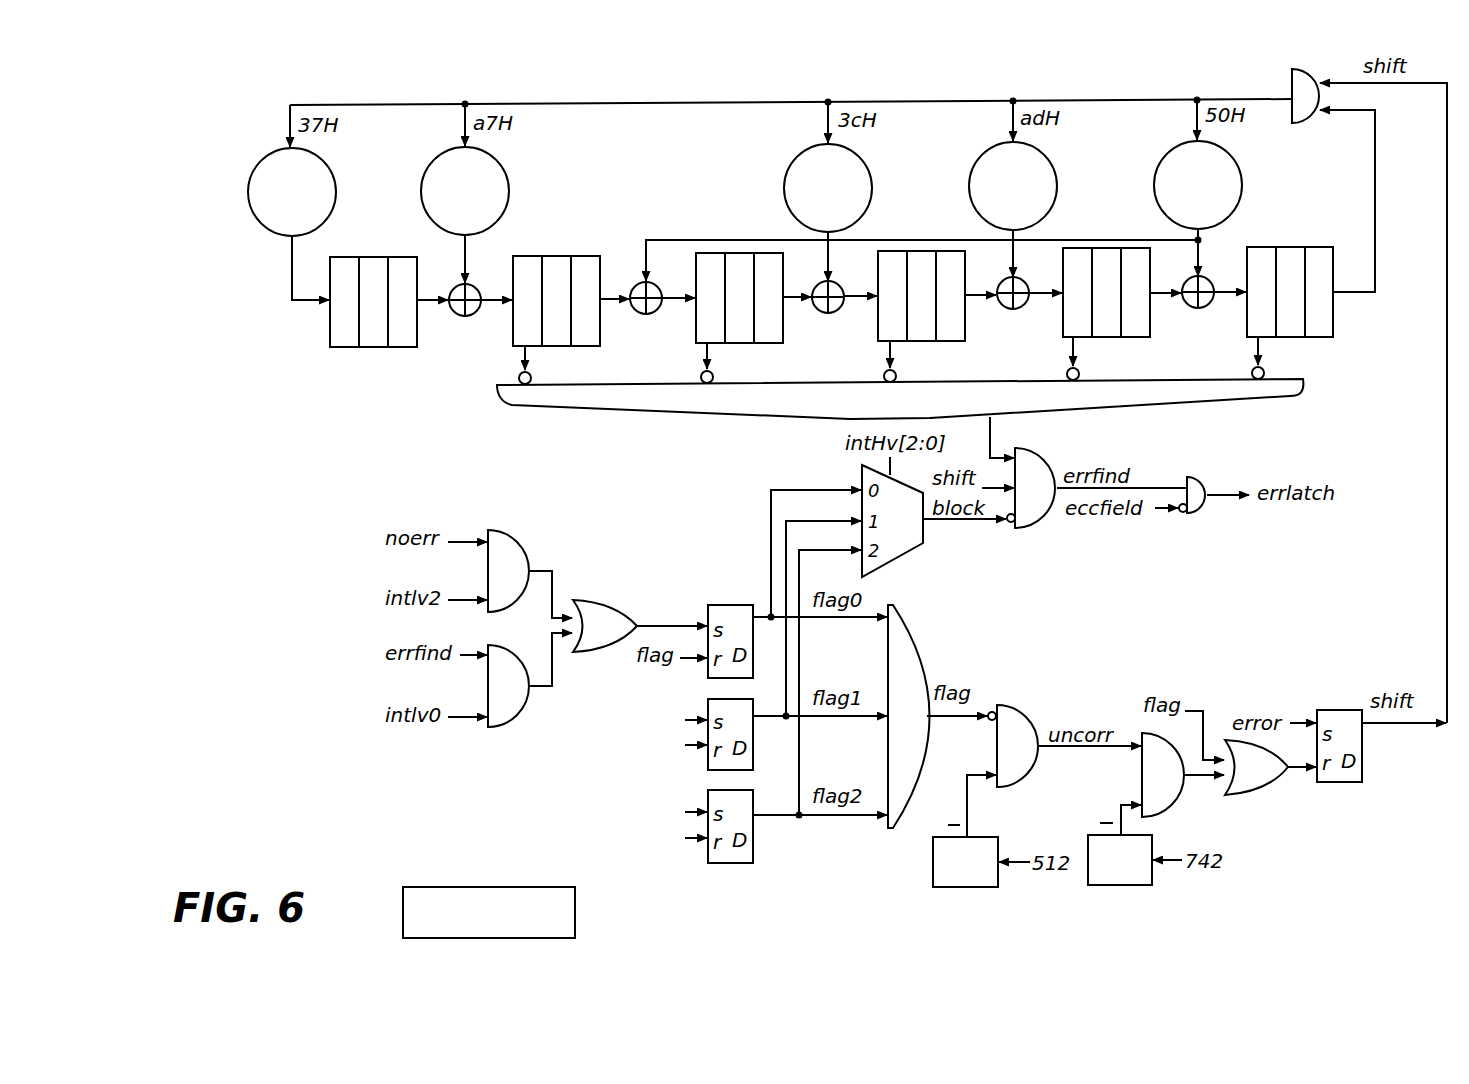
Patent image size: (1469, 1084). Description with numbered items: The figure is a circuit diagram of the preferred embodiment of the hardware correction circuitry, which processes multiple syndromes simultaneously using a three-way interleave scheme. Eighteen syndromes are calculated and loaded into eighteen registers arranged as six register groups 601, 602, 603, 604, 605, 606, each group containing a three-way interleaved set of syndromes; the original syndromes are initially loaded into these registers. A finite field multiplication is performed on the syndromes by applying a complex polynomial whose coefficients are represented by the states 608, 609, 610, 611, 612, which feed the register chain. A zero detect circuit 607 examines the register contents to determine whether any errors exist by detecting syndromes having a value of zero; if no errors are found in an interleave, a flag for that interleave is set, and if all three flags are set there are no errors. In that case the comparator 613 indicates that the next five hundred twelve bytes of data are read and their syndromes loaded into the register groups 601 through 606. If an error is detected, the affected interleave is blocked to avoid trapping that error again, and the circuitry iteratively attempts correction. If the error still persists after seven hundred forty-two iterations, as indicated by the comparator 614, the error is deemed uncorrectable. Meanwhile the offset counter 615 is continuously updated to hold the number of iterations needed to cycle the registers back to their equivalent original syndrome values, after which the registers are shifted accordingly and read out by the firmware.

The register group 601 is at (1247, 318).
The register group 602 is at (1063, 318).
The register group 603 is at (878, 320).
The register group 604 is at (696, 322).
The register group 605 is at (580, 256).
The register group 606 is at (402, 256).
The zero detect circuit 607 is at (1265, 398).
The state 608 is at (333, 176).
The state 609 is at (506, 175).
The state 610 is at (871, 170).
The state 611 is at (1056, 168).
The state 612 is at (1241, 167).
The comparator 613 is at (1000, 848).
The comparator 614 is at (1155, 846).
The offset counter 615 is at (762, 901).